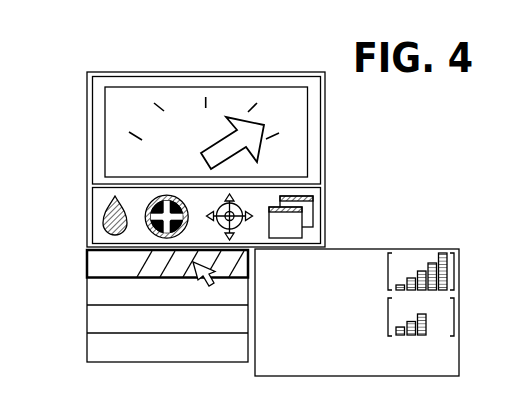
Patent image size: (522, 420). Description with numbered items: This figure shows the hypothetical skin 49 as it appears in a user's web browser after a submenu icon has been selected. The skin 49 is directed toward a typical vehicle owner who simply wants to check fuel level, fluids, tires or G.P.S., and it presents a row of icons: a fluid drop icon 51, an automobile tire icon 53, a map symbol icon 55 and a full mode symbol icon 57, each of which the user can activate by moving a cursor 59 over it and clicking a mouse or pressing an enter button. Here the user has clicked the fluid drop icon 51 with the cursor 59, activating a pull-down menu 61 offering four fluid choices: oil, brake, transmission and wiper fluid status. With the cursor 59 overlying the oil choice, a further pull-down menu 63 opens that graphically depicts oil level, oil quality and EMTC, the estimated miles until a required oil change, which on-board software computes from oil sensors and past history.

The skin 49 is at (207, 72).
The fluid drop icon 51 is at (100, 232).
The automobile tire icon 53 is at (148, 205).
The map symbol icon 55 is at (232, 195).
The full mode symbol icon 57 is at (313, 197).
The cursor 59 is at (212, 284).
The pull-down menu 61 is at (85, 292).
The further pull-down menu 63 is at (357, 376).